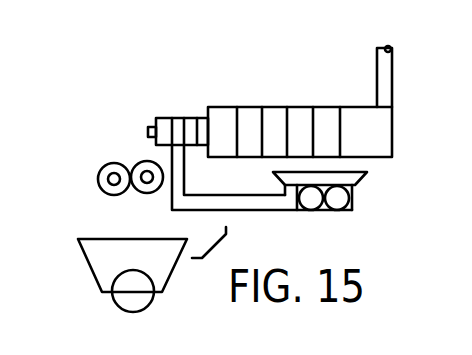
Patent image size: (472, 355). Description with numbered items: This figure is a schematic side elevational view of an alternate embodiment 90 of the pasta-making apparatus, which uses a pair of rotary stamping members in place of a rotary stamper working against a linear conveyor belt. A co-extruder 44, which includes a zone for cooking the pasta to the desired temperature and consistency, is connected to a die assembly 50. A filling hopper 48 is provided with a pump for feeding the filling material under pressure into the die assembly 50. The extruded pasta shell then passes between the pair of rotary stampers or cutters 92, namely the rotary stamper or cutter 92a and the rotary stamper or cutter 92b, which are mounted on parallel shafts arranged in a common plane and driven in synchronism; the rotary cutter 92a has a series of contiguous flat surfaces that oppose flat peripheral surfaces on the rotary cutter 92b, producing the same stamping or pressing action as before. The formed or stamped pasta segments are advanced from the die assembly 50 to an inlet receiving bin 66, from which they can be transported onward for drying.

The embodiment 90 is at (196, 135).
The die assembly 50 is at (178, 103).
The co-extruder 44 is at (312, 98).
The filling hopper 48 is at (368, 197).
The rotary stampers or cutters 92 is at (90, 181).
The rotary stamper or cutter 92a is at (100, 172).
The rotary stamper or cutter 92b is at (144, 160).
The inlet receiving bin 66 is at (96, 264).